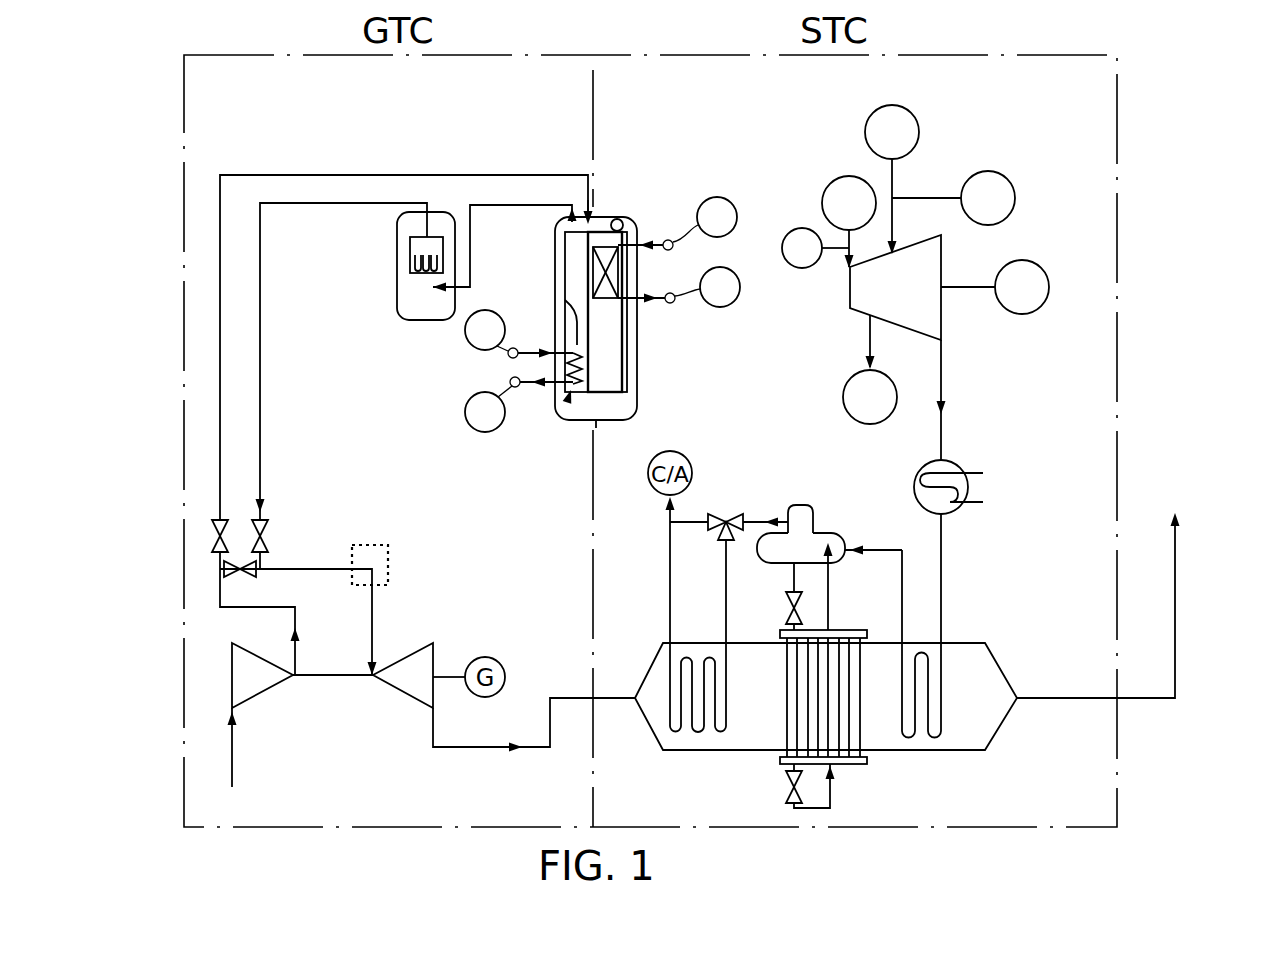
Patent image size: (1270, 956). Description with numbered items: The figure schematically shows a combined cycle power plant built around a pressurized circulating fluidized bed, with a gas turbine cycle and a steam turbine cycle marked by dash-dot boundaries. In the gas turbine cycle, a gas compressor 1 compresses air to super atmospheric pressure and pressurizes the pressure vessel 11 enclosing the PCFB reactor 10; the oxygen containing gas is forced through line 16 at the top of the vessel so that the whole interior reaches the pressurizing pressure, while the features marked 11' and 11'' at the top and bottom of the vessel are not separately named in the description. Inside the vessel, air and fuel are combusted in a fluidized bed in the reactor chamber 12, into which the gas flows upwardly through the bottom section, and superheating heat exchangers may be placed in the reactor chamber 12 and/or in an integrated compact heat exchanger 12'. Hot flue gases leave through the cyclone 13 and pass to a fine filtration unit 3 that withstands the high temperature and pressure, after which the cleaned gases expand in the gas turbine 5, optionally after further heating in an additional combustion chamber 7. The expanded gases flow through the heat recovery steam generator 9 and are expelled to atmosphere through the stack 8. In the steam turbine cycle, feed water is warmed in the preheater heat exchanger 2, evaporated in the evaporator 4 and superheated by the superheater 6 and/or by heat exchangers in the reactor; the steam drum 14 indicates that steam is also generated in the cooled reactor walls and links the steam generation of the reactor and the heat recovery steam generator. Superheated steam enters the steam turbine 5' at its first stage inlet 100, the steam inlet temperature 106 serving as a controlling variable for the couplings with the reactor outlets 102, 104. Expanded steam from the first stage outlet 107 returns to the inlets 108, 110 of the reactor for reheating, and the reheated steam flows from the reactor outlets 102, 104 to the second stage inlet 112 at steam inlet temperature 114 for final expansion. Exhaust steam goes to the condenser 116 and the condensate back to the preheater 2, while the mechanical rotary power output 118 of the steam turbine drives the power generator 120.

The gas compressor 1 is at (247, 690).
The preheater heat exchanger 2 is at (941, 702).
The fine filtration unit 3 is at (392, 274).
The evaporator 4 is at (840, 723).
The gas turbine 5 is at (363, 698).
The steam turbine 5' is at (946, 308).
The HRSG superheater 6 is at (713, 722).
The additional combustion chamber 7 is at (388, 560).
The stack 8 is at (1182, 523).
The heat recovery steam generator 9 is at (1008, 580).
The PCFB reactor 10 is at (645, 211).
The pressure vessel 11 is at (644, 316).
The vessel inlet 11' is at (630, 147).
The vessel outlet 11'' is at (625, 475).
The reactor chamber 12 is at (652, 312).
The integrated compact heat exchanger 12' is at (524, 446).
The cyclone 13 is at (573, 277).
The steam drum 14 is at (620, 217).
The line 16 is at (584, 172).
The first stage inlet 100 is at (830, 183).
The reactor outlet 102 is at (468, 418).
The reactor outlet 104 is at (728, 306).
The steam inlet temperature T1 106 is at (800, 268).
The first stage outlet 107 is at (845, 415).
The reactor inlet 108 is at (727, 198).
The reactor inlet 110 is at (466, 333).
The second stage inlet 112 is at (918, 123).
The steam inlet temperature T2 114 is at (1007, 180).
The condenser 116 is at (970, 485).
The mechanical rotary power output 118 is at (943, 278).
The power generator 120 is at (1050, 273).